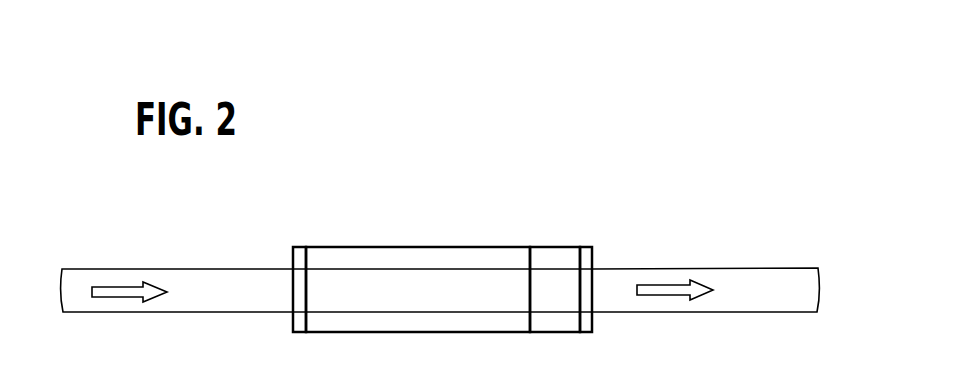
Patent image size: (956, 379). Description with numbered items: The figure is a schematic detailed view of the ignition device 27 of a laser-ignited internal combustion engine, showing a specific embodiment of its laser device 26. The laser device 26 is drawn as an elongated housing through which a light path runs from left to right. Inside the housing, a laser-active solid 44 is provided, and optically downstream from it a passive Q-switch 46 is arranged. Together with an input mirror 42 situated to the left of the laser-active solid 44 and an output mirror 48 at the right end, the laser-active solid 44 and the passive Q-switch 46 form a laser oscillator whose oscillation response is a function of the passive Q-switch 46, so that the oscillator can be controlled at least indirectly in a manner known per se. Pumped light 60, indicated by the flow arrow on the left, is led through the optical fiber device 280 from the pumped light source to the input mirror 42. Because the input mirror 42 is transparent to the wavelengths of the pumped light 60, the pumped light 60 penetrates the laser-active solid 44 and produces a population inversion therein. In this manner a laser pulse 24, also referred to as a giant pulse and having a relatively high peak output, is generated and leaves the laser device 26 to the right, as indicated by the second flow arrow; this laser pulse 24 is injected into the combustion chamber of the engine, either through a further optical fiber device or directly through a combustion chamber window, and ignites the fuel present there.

The laser pulse 24 is at (757, 290).
The laser device 26 is at (451, 238).
The ignition device 27 is at (526, 130).
The input mirror 42 is at (298, 262).
The laser-active solid 44 is at (381, 260).
The passive Q-switch 46 is at (556, 260).
The output mirror 48 is at (587, 262).
The pumped light 60 is at (118, 293).
The optical fiber device 280 is at (223, 292).